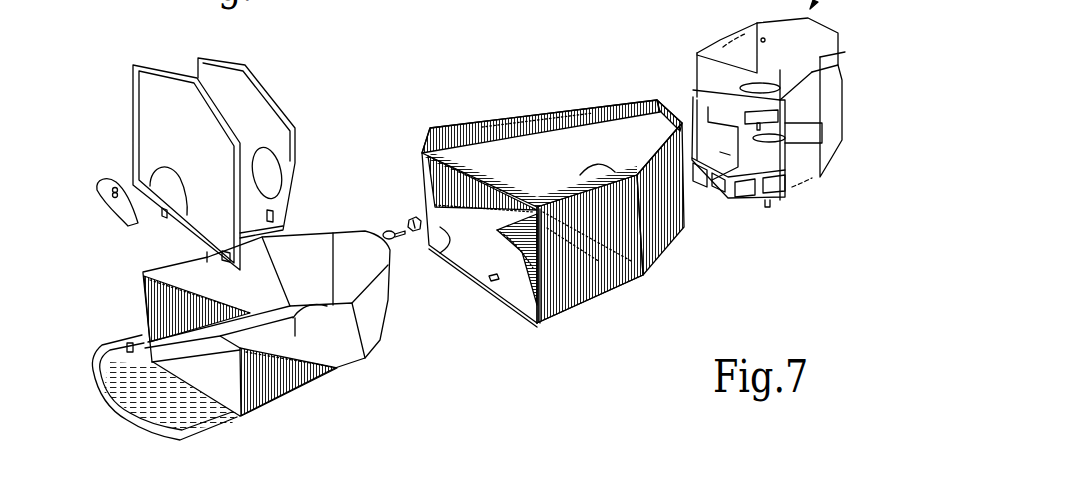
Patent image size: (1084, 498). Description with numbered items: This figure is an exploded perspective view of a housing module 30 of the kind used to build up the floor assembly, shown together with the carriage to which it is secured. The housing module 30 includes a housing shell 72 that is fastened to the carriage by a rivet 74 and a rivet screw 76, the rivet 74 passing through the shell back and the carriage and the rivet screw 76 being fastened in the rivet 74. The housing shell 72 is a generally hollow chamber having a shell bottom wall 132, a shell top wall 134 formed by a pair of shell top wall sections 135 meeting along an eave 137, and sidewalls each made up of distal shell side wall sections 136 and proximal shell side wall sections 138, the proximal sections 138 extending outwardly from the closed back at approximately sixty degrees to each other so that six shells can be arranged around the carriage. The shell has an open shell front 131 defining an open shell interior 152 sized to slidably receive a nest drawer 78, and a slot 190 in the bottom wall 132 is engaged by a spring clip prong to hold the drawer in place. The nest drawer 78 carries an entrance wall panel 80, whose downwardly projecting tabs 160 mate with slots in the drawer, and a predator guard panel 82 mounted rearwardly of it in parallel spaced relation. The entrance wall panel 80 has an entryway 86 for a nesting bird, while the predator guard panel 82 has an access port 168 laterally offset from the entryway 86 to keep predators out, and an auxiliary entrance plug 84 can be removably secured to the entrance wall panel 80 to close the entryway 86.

The housing module 30 is at (545, 349).
The housing shell 72 is at (587, 193).
The rivet 74 is at (412, 216).
The rivet screw 76 is at (389, 231).
The nest drawer 78 is at (275, 413).
The entrance wall panel 80 is at (142, 153).
The predator guard panel 82 is at (283, 133).
The auxiliary entrance plug 84 is at (111, 226).
The entryway 86 is at (146, 166).
The open shell front 131 is at (545, 316).
The shell bottom wall 132 is at (528, 299).
The shell top wall 134 is at (588, 113).
The shell top wall sections 135 is at (523, 118).
The distal shell side wall sections 136 is at (445, 252).
The eave 137 is at (482, 133).
The proximal shell side wall sections 138 is at (673, 240).
The shell interior 152 is at (476, 255).
The downwardly projecting tabs 160 is at (207, 259).
The access port 168 is at (275, 182).
The slot 190 is at (487, 280).